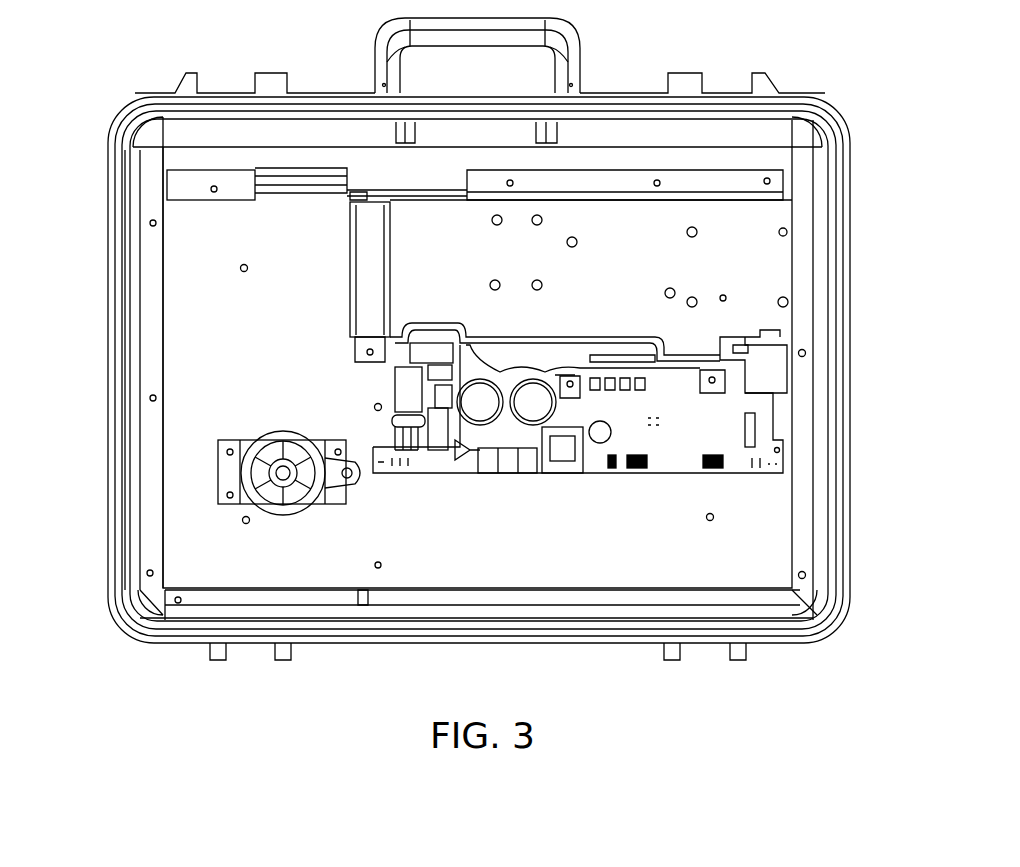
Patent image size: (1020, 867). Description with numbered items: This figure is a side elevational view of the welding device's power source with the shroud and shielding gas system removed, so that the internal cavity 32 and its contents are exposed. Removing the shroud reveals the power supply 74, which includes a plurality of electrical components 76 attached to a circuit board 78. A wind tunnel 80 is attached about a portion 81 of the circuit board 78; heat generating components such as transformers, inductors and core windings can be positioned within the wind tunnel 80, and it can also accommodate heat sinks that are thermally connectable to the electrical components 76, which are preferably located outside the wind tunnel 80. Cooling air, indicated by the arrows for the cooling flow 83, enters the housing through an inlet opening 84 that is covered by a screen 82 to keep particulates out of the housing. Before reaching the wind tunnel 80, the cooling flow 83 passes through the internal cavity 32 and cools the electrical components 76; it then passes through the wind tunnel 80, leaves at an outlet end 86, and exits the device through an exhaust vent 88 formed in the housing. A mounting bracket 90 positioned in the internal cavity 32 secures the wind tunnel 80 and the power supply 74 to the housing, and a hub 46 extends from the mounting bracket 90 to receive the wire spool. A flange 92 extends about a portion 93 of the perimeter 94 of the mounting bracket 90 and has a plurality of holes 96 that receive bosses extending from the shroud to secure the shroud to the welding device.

The internal cavity 32 is at (182, 153).
The hub 46 is at (262, 455).
The power supply 74 is at (603, 483).
The electrical components 76 is at (532, 410).
The circuit board 78 is at (693, 416).
The wind tunnel 80 is at (591, 281).
The portion of circuit board 81 is at (365, 348).
The screen 82 is at (130, 260).
The cooling flow 83 is at (350, 270).
The inlet opening 84 is at (125, 245).
The outlet end 86 is at (800, 250).
The exhaust vent 88 is at (826, 232).
The mounting bracket 90 is at (478, 367).
The flange 92 is at (148, 346).
The portion of perimeter 93 is at (372, 580).
The perimeter 94 is at (372, 607).
The holes 96 is at (152, 398).